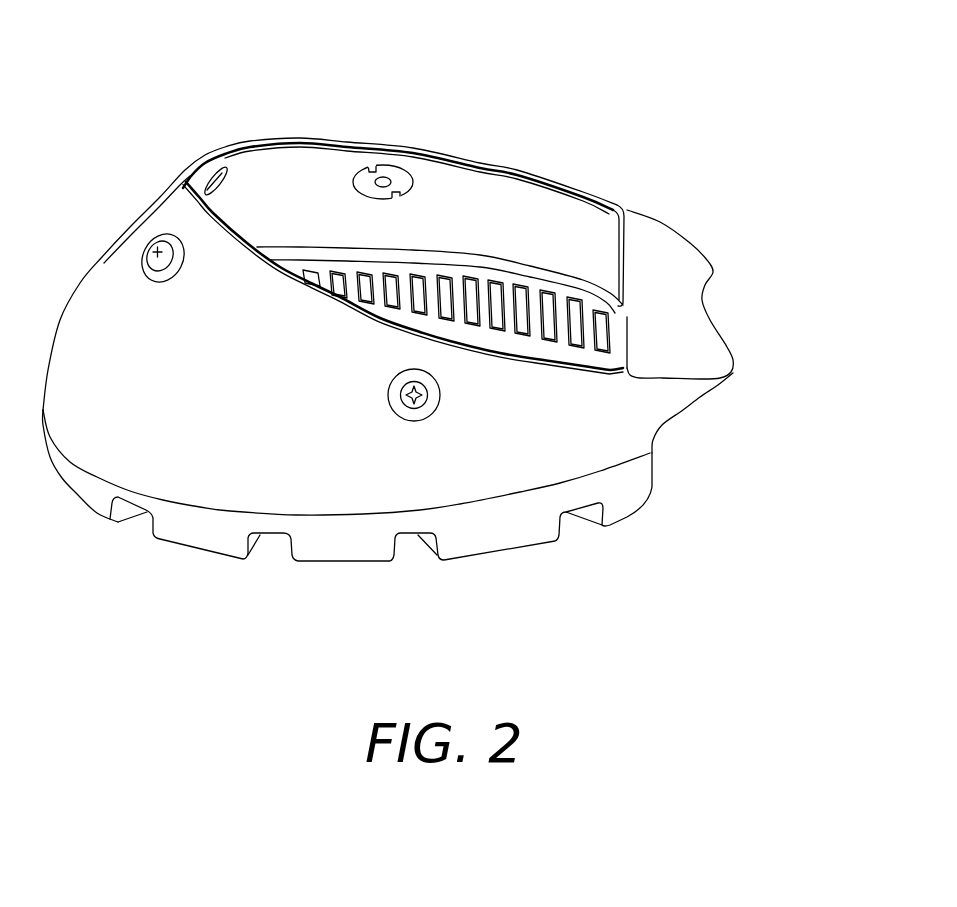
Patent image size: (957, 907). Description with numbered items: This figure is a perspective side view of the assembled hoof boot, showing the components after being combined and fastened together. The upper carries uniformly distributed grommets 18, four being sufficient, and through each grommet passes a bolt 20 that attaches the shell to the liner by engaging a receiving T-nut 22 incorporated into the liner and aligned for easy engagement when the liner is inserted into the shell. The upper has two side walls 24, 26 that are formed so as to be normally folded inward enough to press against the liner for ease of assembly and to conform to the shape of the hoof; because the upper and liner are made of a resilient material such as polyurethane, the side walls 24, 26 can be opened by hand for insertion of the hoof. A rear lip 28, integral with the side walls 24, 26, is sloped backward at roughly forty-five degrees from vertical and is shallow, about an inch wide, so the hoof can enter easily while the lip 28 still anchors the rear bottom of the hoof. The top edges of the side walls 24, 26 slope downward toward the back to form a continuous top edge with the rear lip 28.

The grommet 18 is at (170, 245).
The bolt 20 is at (147, 252).
The T-nut 22 is at (375, 168).
The side wall 24 is at (660, 380).
The side wall 26 is at (628, 215).
The rear lip 28 is at (703, 307).